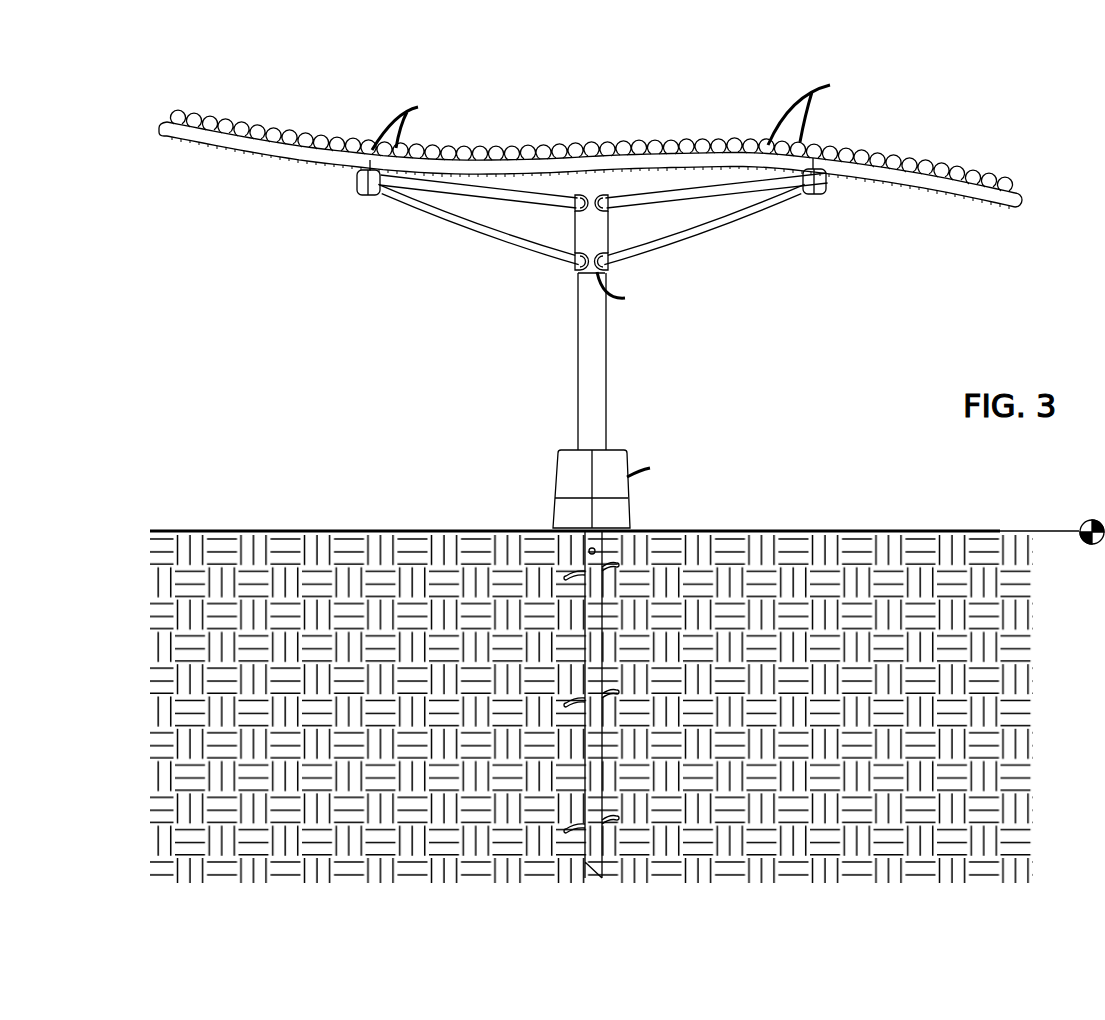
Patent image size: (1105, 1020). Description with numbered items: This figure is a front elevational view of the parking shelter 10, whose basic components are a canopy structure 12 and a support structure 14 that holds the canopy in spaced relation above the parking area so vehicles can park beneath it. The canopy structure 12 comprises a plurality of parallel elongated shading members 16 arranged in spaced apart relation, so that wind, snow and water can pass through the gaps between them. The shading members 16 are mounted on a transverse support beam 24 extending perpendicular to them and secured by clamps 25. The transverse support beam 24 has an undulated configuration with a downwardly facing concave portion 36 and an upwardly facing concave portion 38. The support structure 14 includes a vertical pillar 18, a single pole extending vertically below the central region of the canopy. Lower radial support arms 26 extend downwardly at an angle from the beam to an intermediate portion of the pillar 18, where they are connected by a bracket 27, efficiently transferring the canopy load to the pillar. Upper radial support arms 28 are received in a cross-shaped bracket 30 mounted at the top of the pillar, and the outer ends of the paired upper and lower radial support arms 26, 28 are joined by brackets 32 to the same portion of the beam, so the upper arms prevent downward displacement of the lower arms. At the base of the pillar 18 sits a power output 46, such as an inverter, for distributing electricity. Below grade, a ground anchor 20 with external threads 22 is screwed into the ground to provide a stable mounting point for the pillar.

The parking shelter 10 is at (477, 92).
The canopy structure 12 is at (276, 104).
The support structure 14 is at (525, 328).
The elongated shading members 16 is at (176, 113).
The vertical pillar 18 is at (604, 410).
The ground anchor 20 is at (605, 632).
The external threads 22 is at (612, 700).
The transverse support beam 24 is at (296, 150).
The clamps 25 is at (613, 111).
The lower radial support arms 26 is at (488, 225).
The bracket 27 is at (624, 289).
The upper radial support arms 28 is at (455, 196).
The cross-shaped bracket 30 is at (606, 194).
The brackets 32 is at (358, 195).
The downwardly facing concave portion 36 is at (632, 160).
The upwardly facing concave portion 38 is at (198, 152).
The power output 46 is at (615, 489).